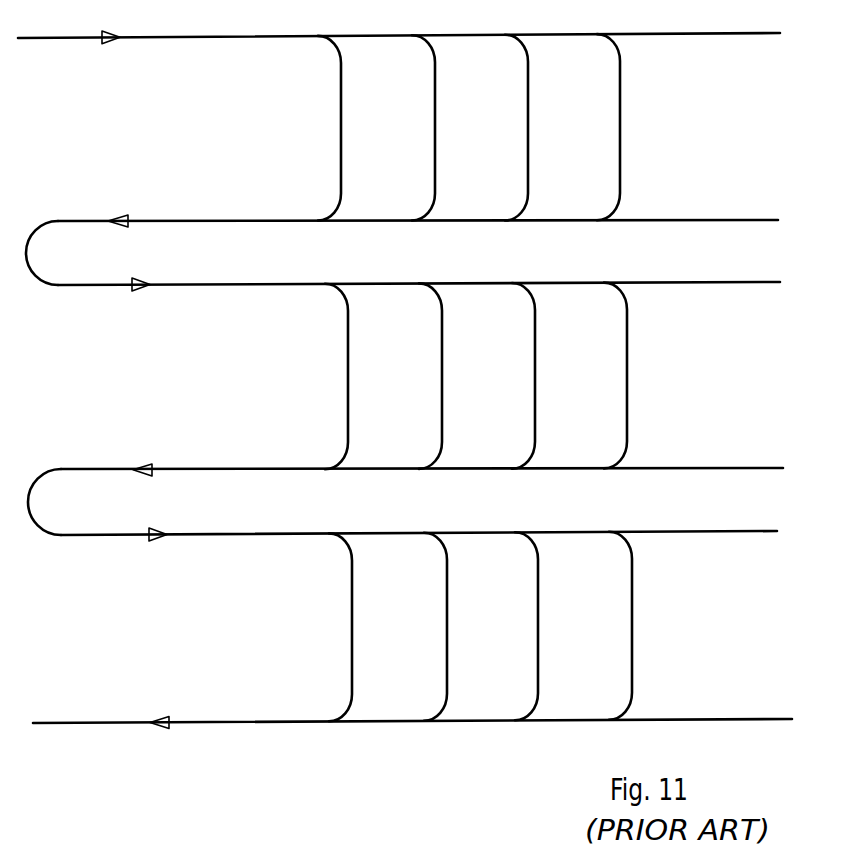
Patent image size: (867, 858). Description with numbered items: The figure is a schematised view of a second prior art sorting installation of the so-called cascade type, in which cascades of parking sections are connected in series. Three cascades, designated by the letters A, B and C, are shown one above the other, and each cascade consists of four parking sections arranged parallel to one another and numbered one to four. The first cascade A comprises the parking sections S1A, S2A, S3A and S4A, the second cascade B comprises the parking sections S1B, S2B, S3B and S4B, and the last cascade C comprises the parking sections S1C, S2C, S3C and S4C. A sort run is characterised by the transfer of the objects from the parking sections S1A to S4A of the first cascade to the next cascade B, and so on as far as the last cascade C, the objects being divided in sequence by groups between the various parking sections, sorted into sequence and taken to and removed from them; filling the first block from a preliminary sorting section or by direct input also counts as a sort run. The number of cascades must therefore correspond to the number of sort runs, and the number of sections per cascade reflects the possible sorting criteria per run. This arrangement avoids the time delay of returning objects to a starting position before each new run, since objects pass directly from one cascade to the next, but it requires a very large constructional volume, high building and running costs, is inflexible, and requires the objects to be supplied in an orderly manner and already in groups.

The parking section S1A is at (341, 126).
The parking section S2A is at (435, 126).
The parking section S3A is at (528, 127).
The parking section S4A is at (620, 128).
The parking section S1B is at (348, 388).
The parking section S2B is at (442, 388).
The parking section S3B is at (535, 388).
The parking section S4B is at (627, 389).
The parking section S1C is at (352, 637).
The parking section S2C is at (447, 637).
The parking section S3C is at (538, 637).
The parking section S4C is at (632, 638).